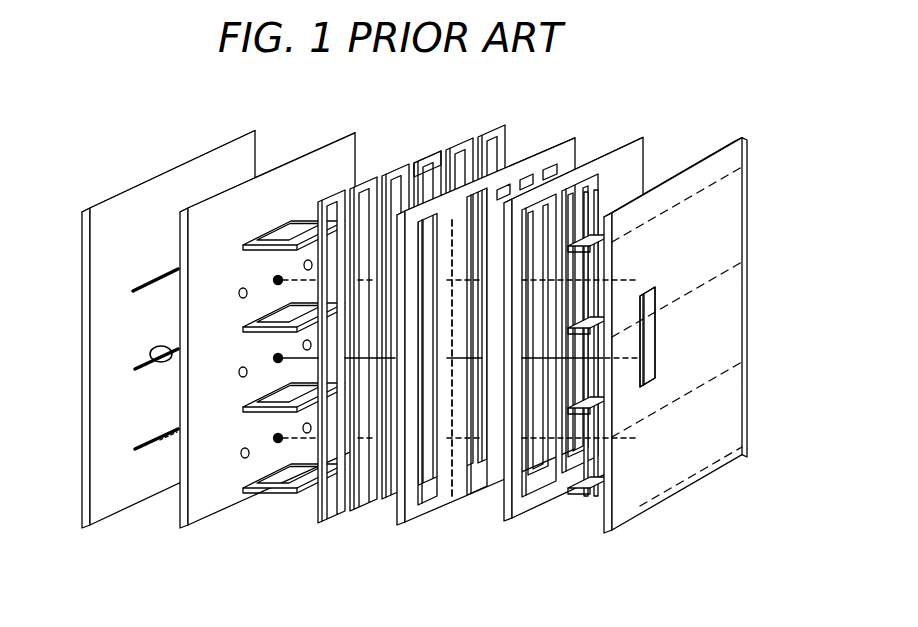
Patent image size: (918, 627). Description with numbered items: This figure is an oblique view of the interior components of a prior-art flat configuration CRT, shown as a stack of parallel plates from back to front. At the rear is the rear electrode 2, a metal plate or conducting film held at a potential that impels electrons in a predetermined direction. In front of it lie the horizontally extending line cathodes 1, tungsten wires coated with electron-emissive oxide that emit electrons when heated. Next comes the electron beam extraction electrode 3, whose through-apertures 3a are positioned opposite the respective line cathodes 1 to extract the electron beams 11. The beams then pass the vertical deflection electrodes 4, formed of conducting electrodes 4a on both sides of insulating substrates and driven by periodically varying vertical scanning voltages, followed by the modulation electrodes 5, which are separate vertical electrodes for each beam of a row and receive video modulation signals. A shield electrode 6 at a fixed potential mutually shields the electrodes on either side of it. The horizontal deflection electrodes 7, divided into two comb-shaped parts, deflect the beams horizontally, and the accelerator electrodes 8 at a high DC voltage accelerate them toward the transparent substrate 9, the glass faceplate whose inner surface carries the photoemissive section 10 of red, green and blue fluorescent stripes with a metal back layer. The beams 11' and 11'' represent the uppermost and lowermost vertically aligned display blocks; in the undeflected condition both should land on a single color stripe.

The line cathode 1 is at (150, 448).
The rear electrode 2 is at (90, 530).
The electron beam extraction electrode 3 is at (188, 530).
The through-apertures 3a is at (241, 460).
The vertical deflection electrodes 4 is at (263, 487).
The conducting electrodes 4a is at (297, 470).
The modulation electrodes 5 is at (345, 525).
The shield electrode 6 is at (410, 525).
The horizontal deflection electrodes 7 is at (523, 520).
The accelerator electrodes 8 is at (579, 500).
The transparent substrate 9 is at (638, 508).
The photoemissive section 10 is at (652, 382).
The electron beams 11 is at (520, 378).
The upper electron beam 11' is at (409, 152).
The lower electron beam 11'' is at (446, 390).